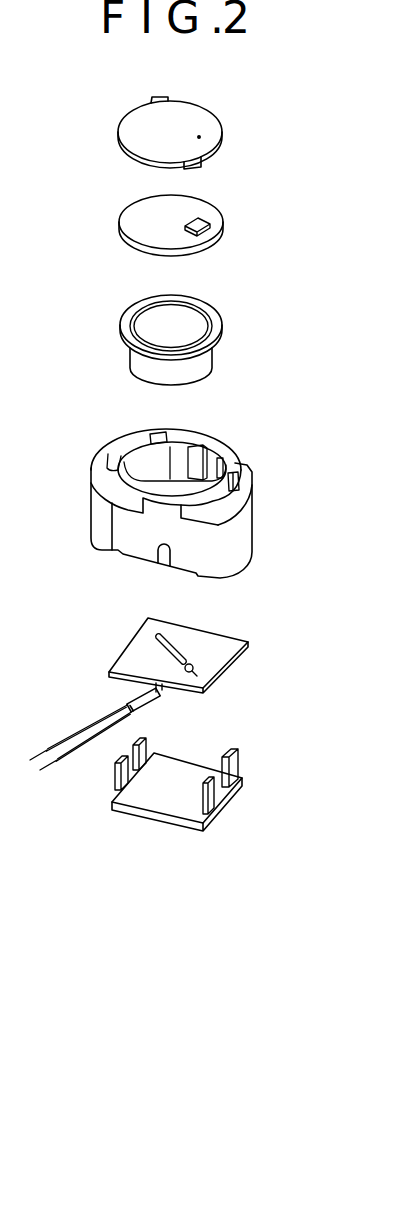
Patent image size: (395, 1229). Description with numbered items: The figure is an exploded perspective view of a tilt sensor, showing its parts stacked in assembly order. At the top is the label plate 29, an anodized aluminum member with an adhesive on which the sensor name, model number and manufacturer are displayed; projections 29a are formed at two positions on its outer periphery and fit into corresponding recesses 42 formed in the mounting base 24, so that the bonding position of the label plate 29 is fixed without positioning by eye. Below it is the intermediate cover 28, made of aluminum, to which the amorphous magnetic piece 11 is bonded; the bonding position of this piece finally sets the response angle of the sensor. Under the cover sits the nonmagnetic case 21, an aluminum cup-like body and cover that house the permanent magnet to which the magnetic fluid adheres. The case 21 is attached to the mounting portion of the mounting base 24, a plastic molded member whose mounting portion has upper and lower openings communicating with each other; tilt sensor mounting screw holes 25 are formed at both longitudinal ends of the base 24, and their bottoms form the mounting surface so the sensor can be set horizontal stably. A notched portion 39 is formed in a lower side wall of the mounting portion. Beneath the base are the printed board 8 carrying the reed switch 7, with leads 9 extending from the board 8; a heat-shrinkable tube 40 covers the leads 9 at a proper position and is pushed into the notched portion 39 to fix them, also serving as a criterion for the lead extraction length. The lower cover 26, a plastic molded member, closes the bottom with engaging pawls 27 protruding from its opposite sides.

The reed switch 7 is at (172, 640).
The printed board 8 is at (227, 641).
The leads 9 is at (108, 712).
The amorphous magnetic piece 11 is at (207, 225).
The nonmagnetic case 21 is at (221, 330).
The mounting base 24 is at (250, 525).
The tilt sensor mounting screw holes 25 is at (240, 488).
The lower cover 26 is at (150, 816).
The engaging pawls 27 is at (117, 772).
The intermediate cover 28 is at (121, 222).
The label plate 29 is at (218, 128).
The projections 29a is at (203, 167).
The notched portion 39 is at (166, 563).
The heat-shrinkable tube 40 is at (152, 703).
The recesses 42 is at (152, 434).